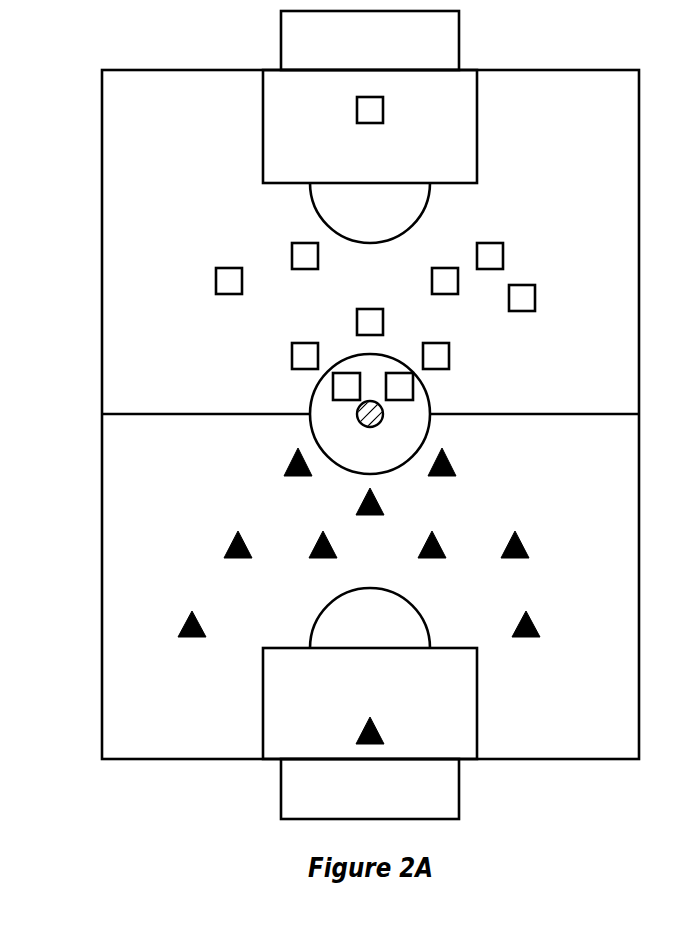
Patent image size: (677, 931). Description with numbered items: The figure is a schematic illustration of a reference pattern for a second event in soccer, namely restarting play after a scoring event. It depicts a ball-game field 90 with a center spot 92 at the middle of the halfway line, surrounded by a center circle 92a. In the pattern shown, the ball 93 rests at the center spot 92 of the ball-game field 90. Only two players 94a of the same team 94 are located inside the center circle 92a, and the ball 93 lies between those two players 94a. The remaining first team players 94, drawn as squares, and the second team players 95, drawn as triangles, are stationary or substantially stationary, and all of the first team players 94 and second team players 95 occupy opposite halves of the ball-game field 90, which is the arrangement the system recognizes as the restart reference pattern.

The ball-game field 90 is at (102, 104).
The center spot 92 is at (381, 415).
The center circle 92a is at (313, 430).
The ball 93 is at (357, 414).
The first team players 94 is at (411, 245).
The two players of the same team 94a is at (445, 377).
The second team players 95 is at (518, 438).